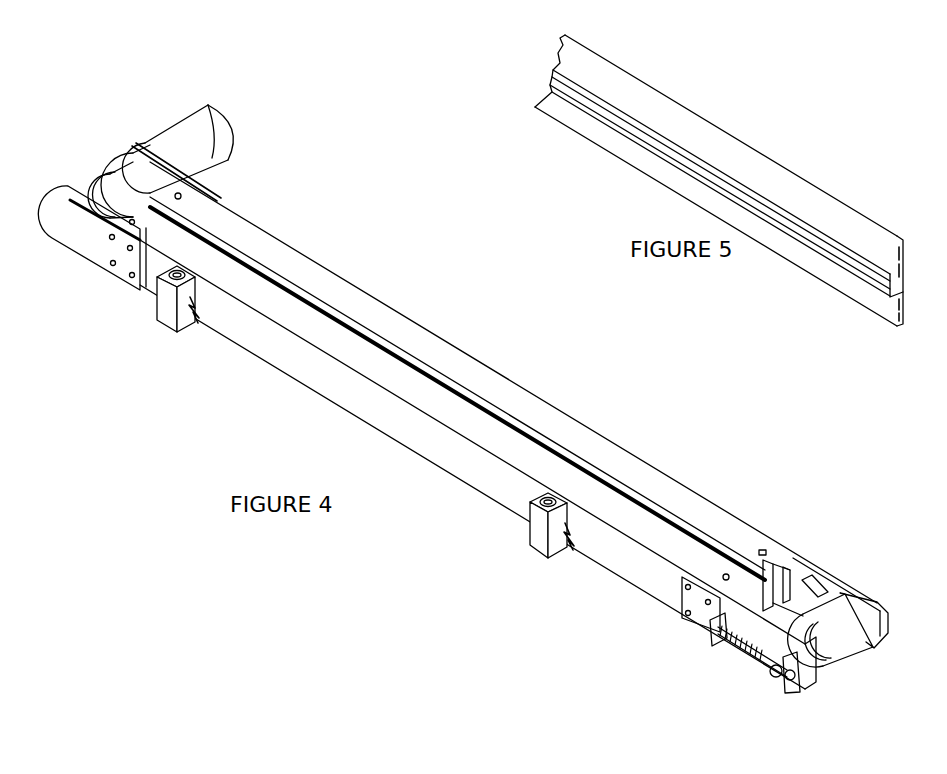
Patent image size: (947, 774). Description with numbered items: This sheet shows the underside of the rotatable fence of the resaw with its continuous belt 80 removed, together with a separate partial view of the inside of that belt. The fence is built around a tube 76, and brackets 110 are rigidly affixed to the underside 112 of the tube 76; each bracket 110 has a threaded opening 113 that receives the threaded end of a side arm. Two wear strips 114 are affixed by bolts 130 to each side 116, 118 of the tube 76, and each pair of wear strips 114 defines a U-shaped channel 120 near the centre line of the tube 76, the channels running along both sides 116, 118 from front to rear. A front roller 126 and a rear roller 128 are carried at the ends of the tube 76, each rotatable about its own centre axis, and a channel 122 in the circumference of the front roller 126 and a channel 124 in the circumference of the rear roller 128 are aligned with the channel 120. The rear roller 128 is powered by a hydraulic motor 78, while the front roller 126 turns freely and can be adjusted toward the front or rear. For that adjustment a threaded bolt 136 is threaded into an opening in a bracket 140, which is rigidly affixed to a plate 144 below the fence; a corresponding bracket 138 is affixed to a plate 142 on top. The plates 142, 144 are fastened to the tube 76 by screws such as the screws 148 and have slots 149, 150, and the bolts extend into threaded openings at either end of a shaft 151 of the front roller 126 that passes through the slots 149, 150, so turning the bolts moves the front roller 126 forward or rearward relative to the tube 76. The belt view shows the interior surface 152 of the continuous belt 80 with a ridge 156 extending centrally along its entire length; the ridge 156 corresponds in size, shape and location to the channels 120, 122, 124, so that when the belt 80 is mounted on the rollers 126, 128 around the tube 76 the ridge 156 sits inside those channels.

In FIG. 4, the tube 76 is at (763, 617).
In FIG. 4, the hydraulic motor 78 is at (178, 140).
In FIG. 5, the continuous belt 80 is at (738, 137).
In FIG. 4, the bracket 110 is at (168, 318).
In FIG. 4, the underside 112 is at (307, 377).
In FIG. 4, the threaded opening 113 is at (173, 262).
In FIG. 4, the wear strip 114 is at (336, 292).
In FIG. 4, the side 116 is at (573, 437).
In FIG. 4, the side 118 is at (783, 572).
In FIG. 4, the U-shaped channel 120 is at (425, 368).
In FIG. 4, the channel 122 is at (840, 656).
In FIG. 4, the channel 124 is at (103, 178).
In FIG. 4, the front roller 126 is at (847, 643).
In FIG. 4, the rear roller 128 is at (90, 185).
In FIG. 4, the bolt 130 is at (182, 194).
In FIG. 4, the threaded bolt 136 is at (730, 650).
In FIG. 4, the bracket 138 is at (784, 690).
In FIG. 4, the bracket 140 is at (710, 631).
In FIG. 4, the plate 142 is at (863, 593).
In FIG. 4, the plate 144 is at (682, 605).
In FIG. 4, the screw 148 is at (685, 587).
In FIG. 4, the slot 149 is at (808, 580).
In FIG. 4, the slot 150 is at (748, 664).
In FIG. 4, the shaft 151 is at (771, 678).
In FIG. 5, the interior surface 152 is at (612, 138).
In FIG. 5, the ridge 156 is at (825, 250).